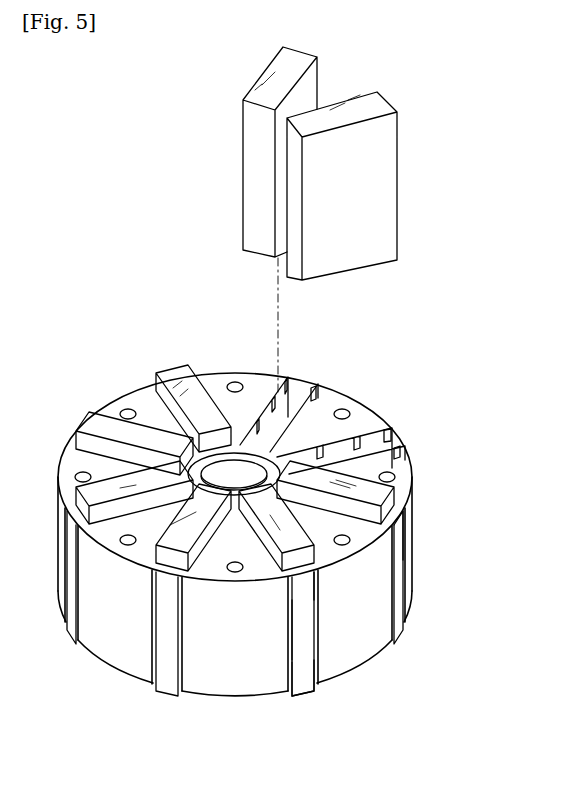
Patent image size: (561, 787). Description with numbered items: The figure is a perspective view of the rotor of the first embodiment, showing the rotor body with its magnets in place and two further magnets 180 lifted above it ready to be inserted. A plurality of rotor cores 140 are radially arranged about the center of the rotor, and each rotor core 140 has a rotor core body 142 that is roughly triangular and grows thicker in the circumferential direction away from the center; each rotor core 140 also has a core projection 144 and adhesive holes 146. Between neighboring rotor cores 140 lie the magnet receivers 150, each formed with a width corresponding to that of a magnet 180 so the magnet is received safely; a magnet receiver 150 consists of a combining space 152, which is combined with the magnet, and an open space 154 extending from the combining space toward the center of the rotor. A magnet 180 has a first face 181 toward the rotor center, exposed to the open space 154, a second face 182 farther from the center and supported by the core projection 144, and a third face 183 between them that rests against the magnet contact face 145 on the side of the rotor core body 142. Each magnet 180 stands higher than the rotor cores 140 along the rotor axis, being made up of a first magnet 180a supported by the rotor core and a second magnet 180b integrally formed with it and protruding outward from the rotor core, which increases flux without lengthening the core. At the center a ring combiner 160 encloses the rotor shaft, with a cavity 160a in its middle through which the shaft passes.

The rotor core 140 is at (212, 371).
The rotor core body 142 is at (235, 382).
The core projection 144 is at (279, 420).
The magnet contact face 145 is at (312, 387).
The adhesive hole 146 is at (289, 383).
The magnet receiver 150 is at (466, 437).
The combining space 152 is at (401, 453).
The open space 154 is at (396, 478).
The ring combiner 160 is at (152, 437).
The cavity 160a is at (190, 443).
The magnet 180 is at (400, 131).
The first magnet 180a is at (298, 608).
The second magnet 180b is at (368, 547).
The first face 181 is at (236, 492).
The second face 182 is at (303, 658).
The third face 183 is at (318, 540).